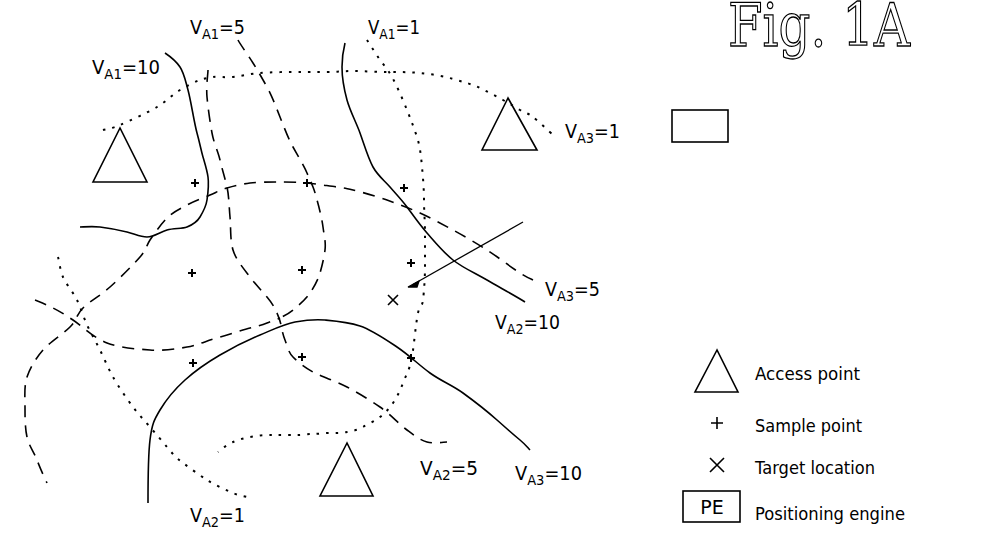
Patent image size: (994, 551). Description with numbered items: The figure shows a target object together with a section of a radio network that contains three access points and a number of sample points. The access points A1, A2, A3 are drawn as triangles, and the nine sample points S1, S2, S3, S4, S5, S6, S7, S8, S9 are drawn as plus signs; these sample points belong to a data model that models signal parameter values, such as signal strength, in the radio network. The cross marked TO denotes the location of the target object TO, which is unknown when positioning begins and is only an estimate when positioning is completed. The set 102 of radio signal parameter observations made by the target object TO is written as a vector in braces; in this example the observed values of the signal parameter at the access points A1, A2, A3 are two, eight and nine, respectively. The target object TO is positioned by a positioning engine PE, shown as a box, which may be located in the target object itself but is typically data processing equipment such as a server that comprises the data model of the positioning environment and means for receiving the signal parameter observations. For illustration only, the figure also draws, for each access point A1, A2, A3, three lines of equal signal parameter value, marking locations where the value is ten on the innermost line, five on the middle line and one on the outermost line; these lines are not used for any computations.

The set of RF signal parameter observations 102 is at (740, 211).
The access point A1 is at (120, 155).
The access point A2 is at (509, 124).
The access point A3 is at (346, 469).
The sample point S1 is at (187, 173).
The sample point S2 is at (298, 194).
The sample point S3 is at (409, 180).
The sample point S4 is at (195, 263).
The sample point S5 is at (302, 260).
The sample point S6 is at (407, 254).
The sample point S7 is at (180, 367).
The sample point S8 is at (313, 349).
The sample point S9 is at (398, 362).
The target object TO is at (388, 298).
The positioning engine PE is at (700, 126).